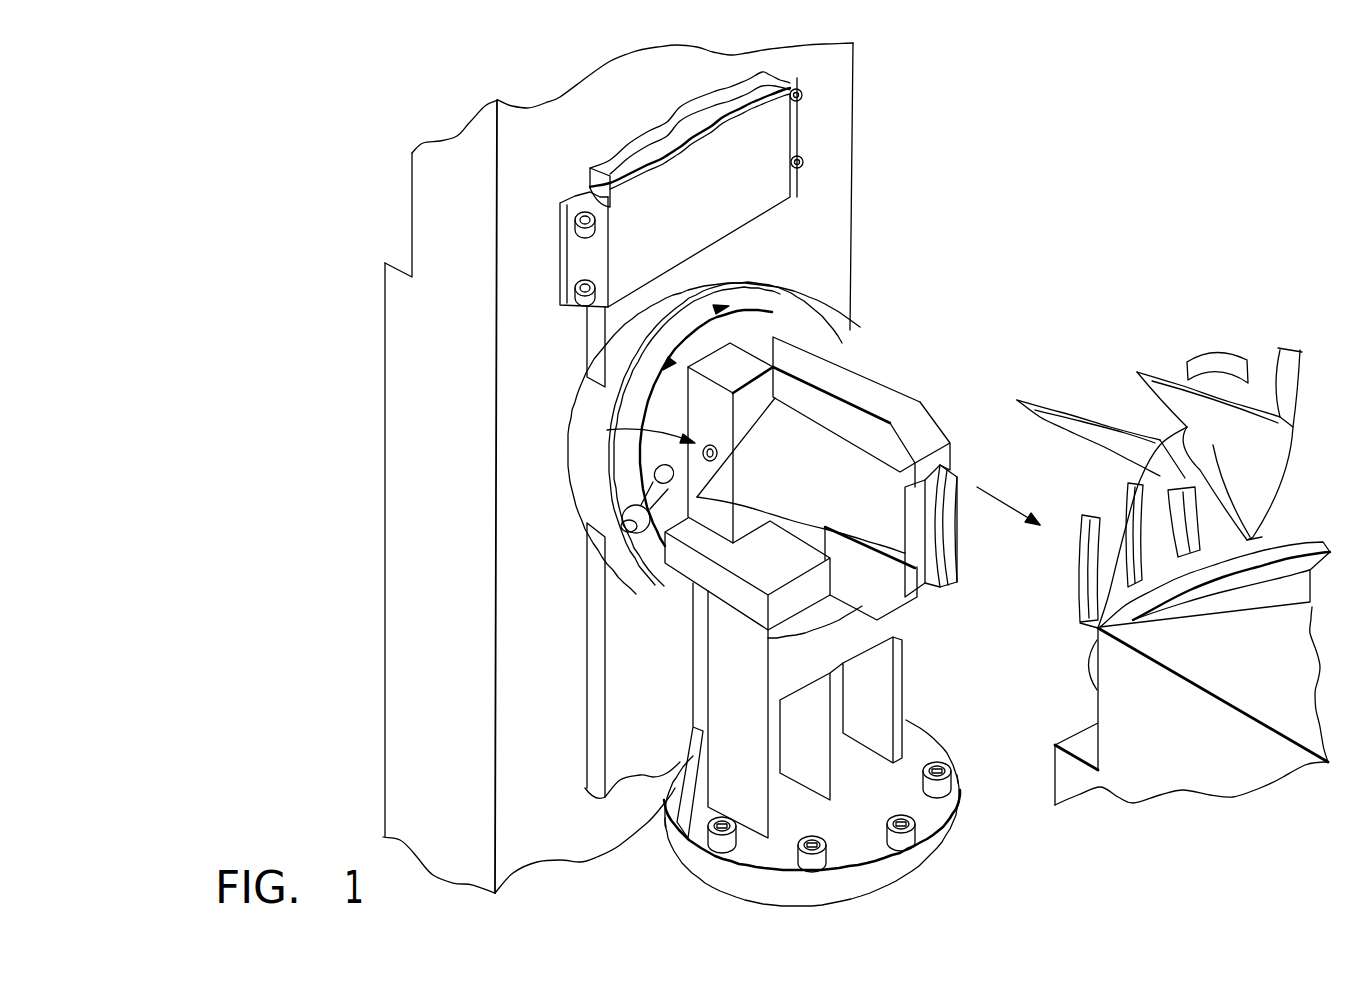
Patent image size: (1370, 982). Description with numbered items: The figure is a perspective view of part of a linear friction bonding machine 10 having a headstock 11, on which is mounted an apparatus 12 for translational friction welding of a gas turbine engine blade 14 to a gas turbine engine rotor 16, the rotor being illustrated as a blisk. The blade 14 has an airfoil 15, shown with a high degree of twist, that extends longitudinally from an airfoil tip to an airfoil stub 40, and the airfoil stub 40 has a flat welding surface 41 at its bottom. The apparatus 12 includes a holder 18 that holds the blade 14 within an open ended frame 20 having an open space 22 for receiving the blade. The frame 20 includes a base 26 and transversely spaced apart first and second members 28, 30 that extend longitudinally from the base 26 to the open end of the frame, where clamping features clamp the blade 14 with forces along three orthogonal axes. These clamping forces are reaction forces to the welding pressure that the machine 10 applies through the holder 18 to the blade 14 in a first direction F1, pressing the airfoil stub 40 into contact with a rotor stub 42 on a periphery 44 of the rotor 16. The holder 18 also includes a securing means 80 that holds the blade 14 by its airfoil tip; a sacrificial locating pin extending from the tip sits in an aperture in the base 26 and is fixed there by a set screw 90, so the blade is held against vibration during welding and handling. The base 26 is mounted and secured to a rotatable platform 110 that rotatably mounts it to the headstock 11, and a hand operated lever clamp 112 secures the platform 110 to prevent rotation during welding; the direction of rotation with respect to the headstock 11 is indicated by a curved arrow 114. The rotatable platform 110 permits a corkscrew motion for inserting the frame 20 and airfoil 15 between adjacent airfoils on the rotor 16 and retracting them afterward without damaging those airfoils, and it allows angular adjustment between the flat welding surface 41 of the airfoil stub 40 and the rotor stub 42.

The linear friction bonding machine 10 is at (1128, 864).
The headstock 11 is at (580, 458).
The apparatus for translational friction welding 12 is at (870, 322).
The gas turbine engine blade 14 is at (960, 483).
The airfoil 15 is at (853, 491).
The gas turbine engine rotor 16 is at (1283, 535).
The holder 18 is at (883, 399).
The open ended frame 20 is at (927, 420).
The open space 22 is at (863, 548).
The base 26 is at (785, 317).
The first member 28 is at (847, 593).
The second member 30 is at (770, 368).
The airfoil stub 40 is at (962, 585).
The flat welding surface 41 is at (962, 523).
The rotor stub 42 is at (1133, 512).
The periphery 44 is at (1077, 628).
The securing means 80 is at (636, 430).
The set screw 90 is at (718, 454).
The rotatable platform 110 is at (773, 297).
The hand operated lever clamp 112 is at (624, 512).
The curved arrow 114 is at (707, 323).
The first direction F1 is at (993, 488).